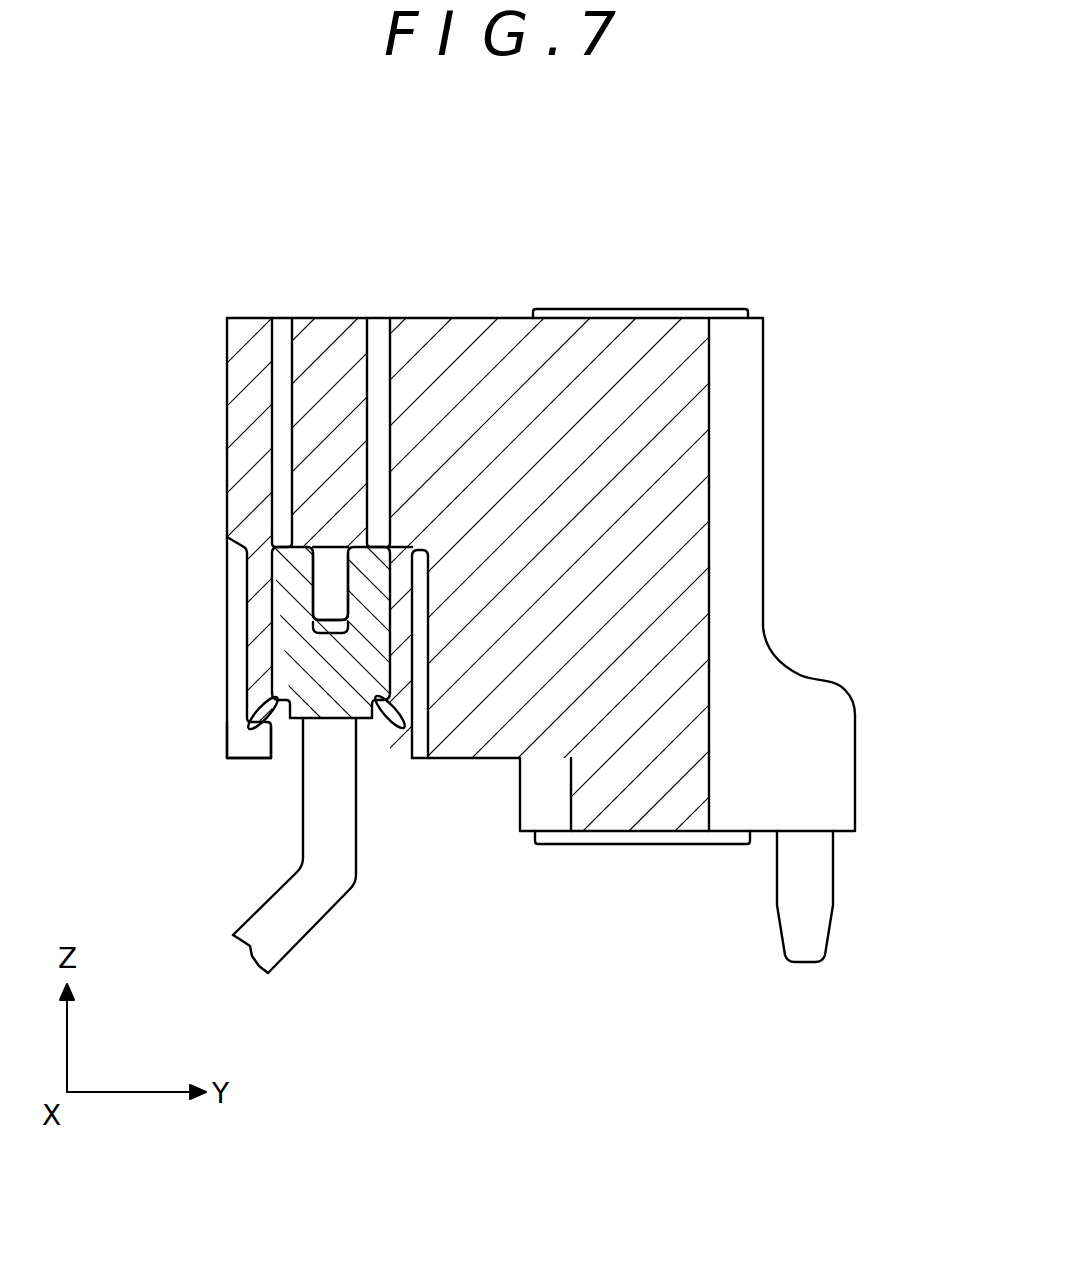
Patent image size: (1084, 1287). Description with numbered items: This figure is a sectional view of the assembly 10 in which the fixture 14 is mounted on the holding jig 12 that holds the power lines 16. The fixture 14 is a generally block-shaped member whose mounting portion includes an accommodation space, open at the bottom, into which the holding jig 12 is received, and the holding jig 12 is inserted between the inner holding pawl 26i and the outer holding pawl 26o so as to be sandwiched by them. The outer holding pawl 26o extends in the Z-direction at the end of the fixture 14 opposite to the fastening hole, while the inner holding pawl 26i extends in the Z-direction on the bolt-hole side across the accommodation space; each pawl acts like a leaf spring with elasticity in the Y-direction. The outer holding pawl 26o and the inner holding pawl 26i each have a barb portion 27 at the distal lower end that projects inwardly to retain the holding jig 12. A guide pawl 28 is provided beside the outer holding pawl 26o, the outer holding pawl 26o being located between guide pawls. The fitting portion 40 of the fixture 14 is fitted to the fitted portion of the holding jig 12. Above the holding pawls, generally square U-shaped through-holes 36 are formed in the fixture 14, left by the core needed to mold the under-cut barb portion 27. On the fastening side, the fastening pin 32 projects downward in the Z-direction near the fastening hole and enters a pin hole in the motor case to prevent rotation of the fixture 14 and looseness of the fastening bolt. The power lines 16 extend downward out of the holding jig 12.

The connector 10 is at (483, 277).
The holding jig 12 is at (300, 640).
The fixture 14 is at (685, 400).
The power lines 16 is at (295, 887).
The outer holding pawl 26o is at (260, 680).
The inner holding pawl 26i is at (413, 655).
The barb portion 27 is at (270, 702).
The guide pawl 28 is at (240, 735).
The fastening pin 32 is at (818, 878).
The through-hole 36 is at (283, 327).
The fitting portion 40 is at (328, 580).